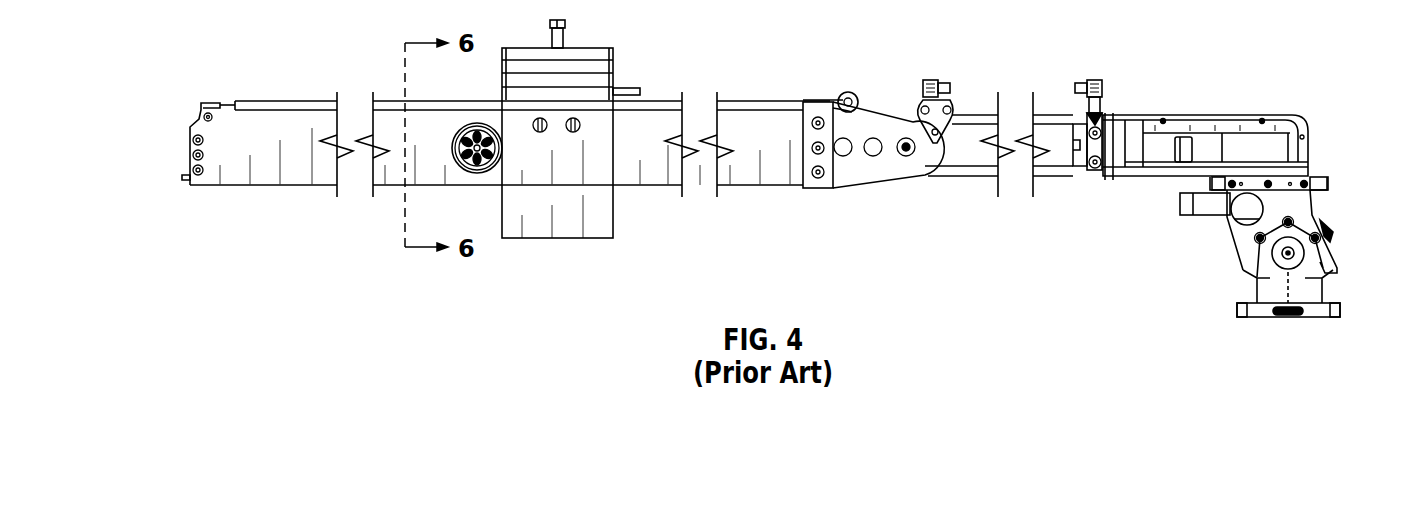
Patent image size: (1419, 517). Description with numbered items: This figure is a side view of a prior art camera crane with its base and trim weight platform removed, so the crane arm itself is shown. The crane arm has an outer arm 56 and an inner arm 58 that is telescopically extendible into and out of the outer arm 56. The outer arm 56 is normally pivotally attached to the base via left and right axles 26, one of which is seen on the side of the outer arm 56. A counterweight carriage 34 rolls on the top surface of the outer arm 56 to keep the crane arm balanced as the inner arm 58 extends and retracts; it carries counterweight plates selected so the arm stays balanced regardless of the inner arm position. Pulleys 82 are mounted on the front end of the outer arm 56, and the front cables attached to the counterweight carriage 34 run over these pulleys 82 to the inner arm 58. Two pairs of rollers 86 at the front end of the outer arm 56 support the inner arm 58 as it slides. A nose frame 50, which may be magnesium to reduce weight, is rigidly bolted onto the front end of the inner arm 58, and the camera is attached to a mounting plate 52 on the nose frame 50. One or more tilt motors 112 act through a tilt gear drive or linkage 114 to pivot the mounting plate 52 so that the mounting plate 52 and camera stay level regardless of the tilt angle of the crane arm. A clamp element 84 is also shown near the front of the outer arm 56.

The axle 26 is at (472, 135).
The counterweight carriage 34 is at (613, 73).
The nose frame 50 is at (1149, 184).
The mounting plate 52 is at (1253, 308).
The outer arm 56 is at (263, 172).
The inner arm 58 is at (963, 157).
The pulleys 82 is at (848, 92).
The clamp 84 is at (878, 135).
The rollers 86 is at (873, 157).
The tilt motor 112 is at (1200, 203).
The tilt gear drive or linkage 114 is at (1243, 222).